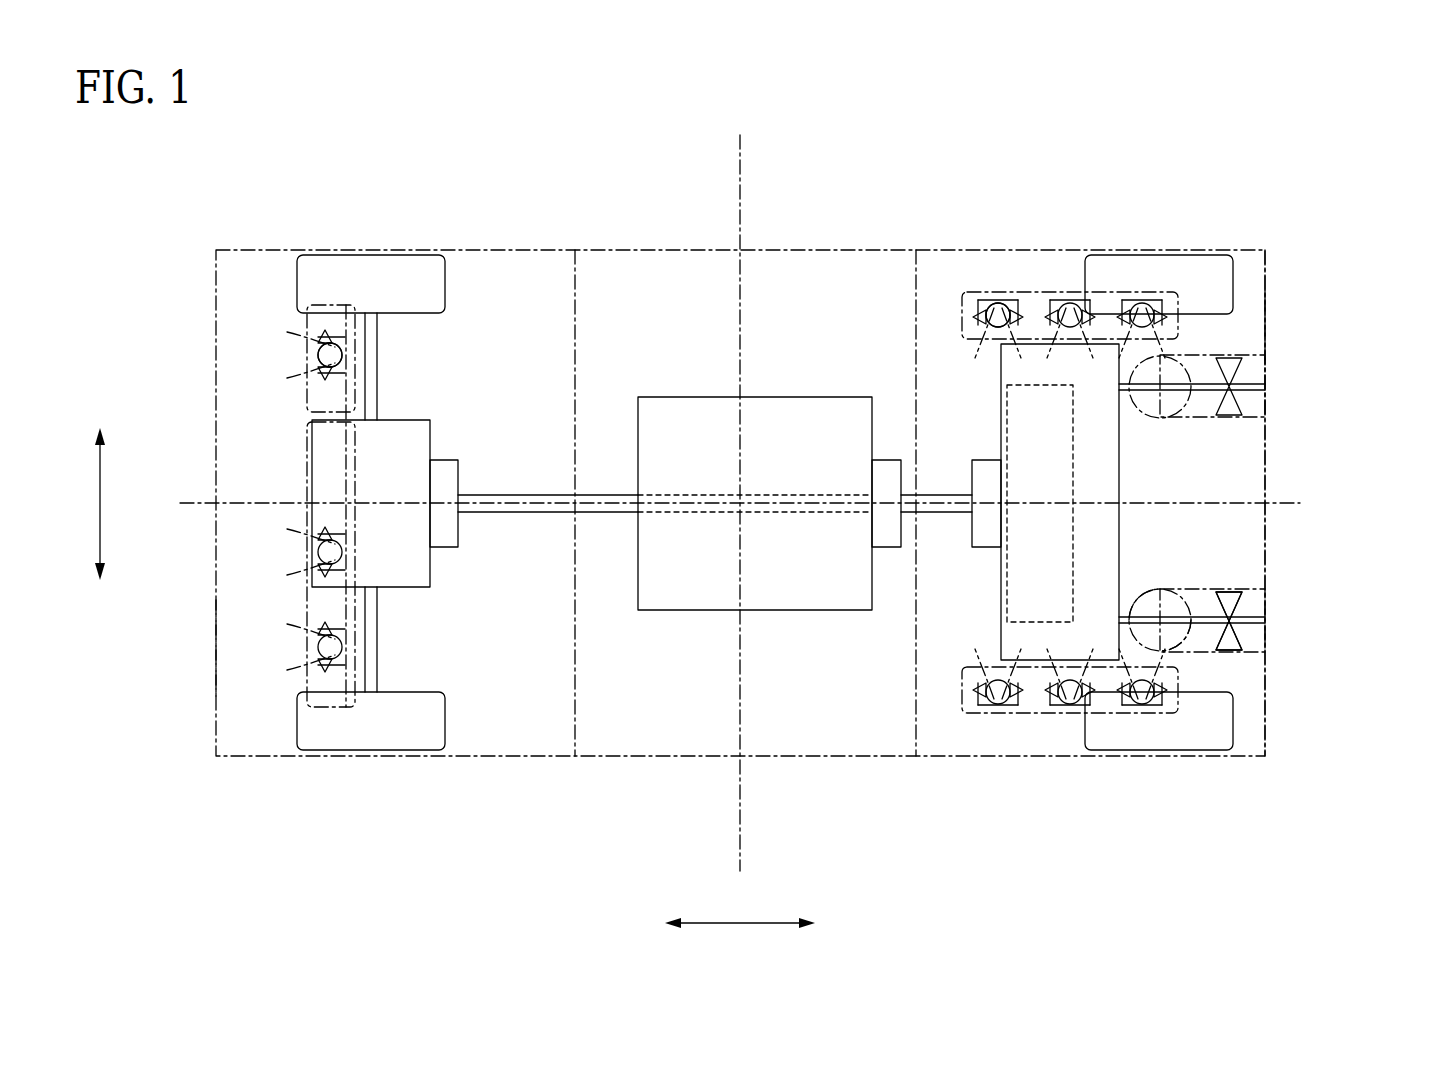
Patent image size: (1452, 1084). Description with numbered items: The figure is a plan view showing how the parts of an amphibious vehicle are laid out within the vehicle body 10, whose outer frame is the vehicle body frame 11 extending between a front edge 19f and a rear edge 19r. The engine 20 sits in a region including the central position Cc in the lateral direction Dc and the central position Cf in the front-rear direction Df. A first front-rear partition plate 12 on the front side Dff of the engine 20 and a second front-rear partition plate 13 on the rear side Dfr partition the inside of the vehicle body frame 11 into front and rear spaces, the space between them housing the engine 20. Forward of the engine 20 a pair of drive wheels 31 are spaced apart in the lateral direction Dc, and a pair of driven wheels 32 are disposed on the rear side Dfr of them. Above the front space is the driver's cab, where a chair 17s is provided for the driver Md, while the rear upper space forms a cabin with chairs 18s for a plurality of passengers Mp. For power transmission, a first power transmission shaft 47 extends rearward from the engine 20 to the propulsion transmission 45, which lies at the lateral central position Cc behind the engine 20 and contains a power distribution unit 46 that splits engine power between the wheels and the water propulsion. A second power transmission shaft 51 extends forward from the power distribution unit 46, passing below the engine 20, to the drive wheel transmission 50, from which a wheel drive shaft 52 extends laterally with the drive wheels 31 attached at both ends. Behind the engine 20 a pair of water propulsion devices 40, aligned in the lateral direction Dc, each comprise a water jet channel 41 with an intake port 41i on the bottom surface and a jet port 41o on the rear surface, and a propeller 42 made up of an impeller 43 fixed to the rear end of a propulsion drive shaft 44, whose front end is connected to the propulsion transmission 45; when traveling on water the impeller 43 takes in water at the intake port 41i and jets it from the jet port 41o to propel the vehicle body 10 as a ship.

The vehicle body 10 is at (243, 246).
The vehicle body frame 11 is at (1265, 258).
The first front-rear partition plate 12 is at (603, 262).
The second front-rear partition plate 13 is at (916, 283).
The front edge 19f is at (216, 647).
The rear edge 19r is at (1265, 330).
The engine 20 is at (702, 380).
The drive wheels 31 is at (400, 260).
The driven wheels 32 is at (1155, 268).
The chair 17s is at (308, 395).
The chairs 18s is at (1036, 292).
The water propulsion device 40 is at (1245, 393).
The water jet channel 41 is at (1190, 590).
The intake port 41i is at (1138, 590).
The jet port 41o is at (1265, 640).
The propeller 42 is at (1344, 568).
The impeller 43 is at (1235, 632).
The propulsion drive shaft 44 is at (1200, 618).
The propulsion transmission 45 is at (982, 372).
The power distribution unit 46 is at (1073, 455).
The first power transmission shaft 47 is at (940, 514).
The drive wheel transmission 50 is at (442, 424).
The second power transmission shaft 51 is at (522, 513).
The wheel drive shaft 52 is at (372, 344).
The driver Md is at (310, 357).
The passengers Mp is at (1005, 310).
The central position in the lateral direction Cc is at (200, 503).
The central position in the front-rear direction Cf is at (740, 212).
The lateral direction Dc is at (85, 504).
The front-rear direction Df is at (740, 908).
The front side Dff is at (647, 924).
The rear side Dfr is at (831, 924).